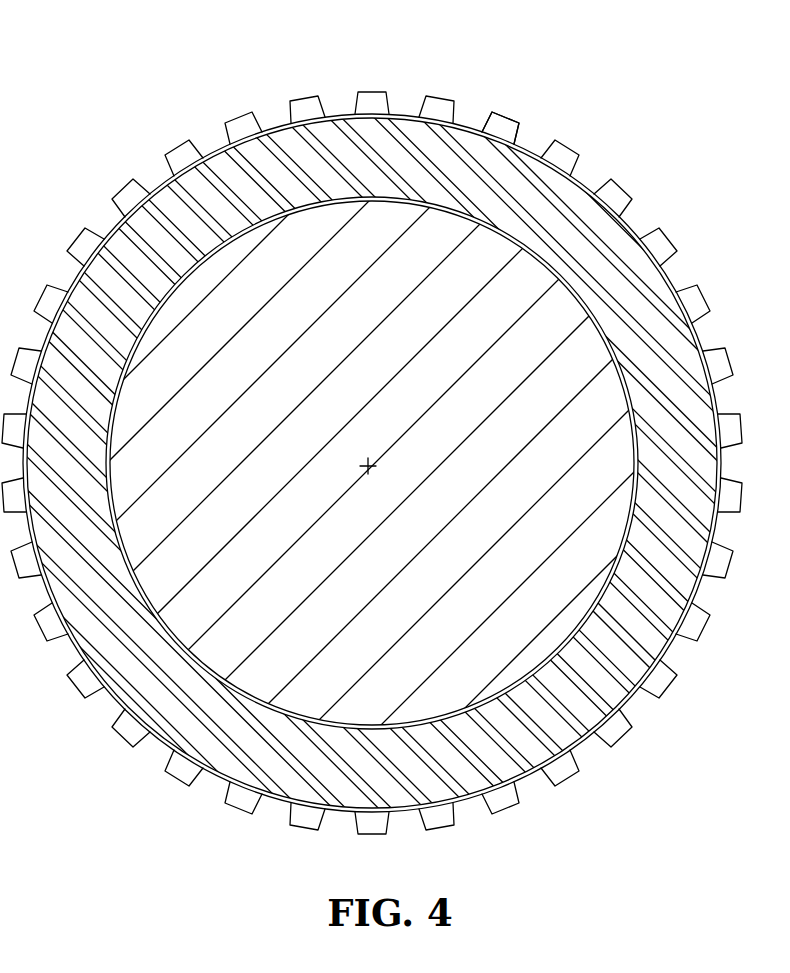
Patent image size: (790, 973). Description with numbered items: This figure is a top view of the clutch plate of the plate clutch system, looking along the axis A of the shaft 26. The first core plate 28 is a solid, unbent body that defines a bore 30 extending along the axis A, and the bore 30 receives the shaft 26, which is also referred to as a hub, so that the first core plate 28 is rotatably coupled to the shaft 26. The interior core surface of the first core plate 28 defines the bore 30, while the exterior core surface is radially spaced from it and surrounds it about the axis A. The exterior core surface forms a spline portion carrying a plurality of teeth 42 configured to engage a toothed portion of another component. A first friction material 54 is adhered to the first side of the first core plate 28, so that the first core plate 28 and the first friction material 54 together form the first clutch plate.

The shaft 26 is at (190, 350).
The first core plate 28 is at (665, 242).
The bore 30 is at (237, 633).
The teeth 42 is at (507, 117).
The first friction material 54 is at (377, 132).
The axis A is at (368, 468).